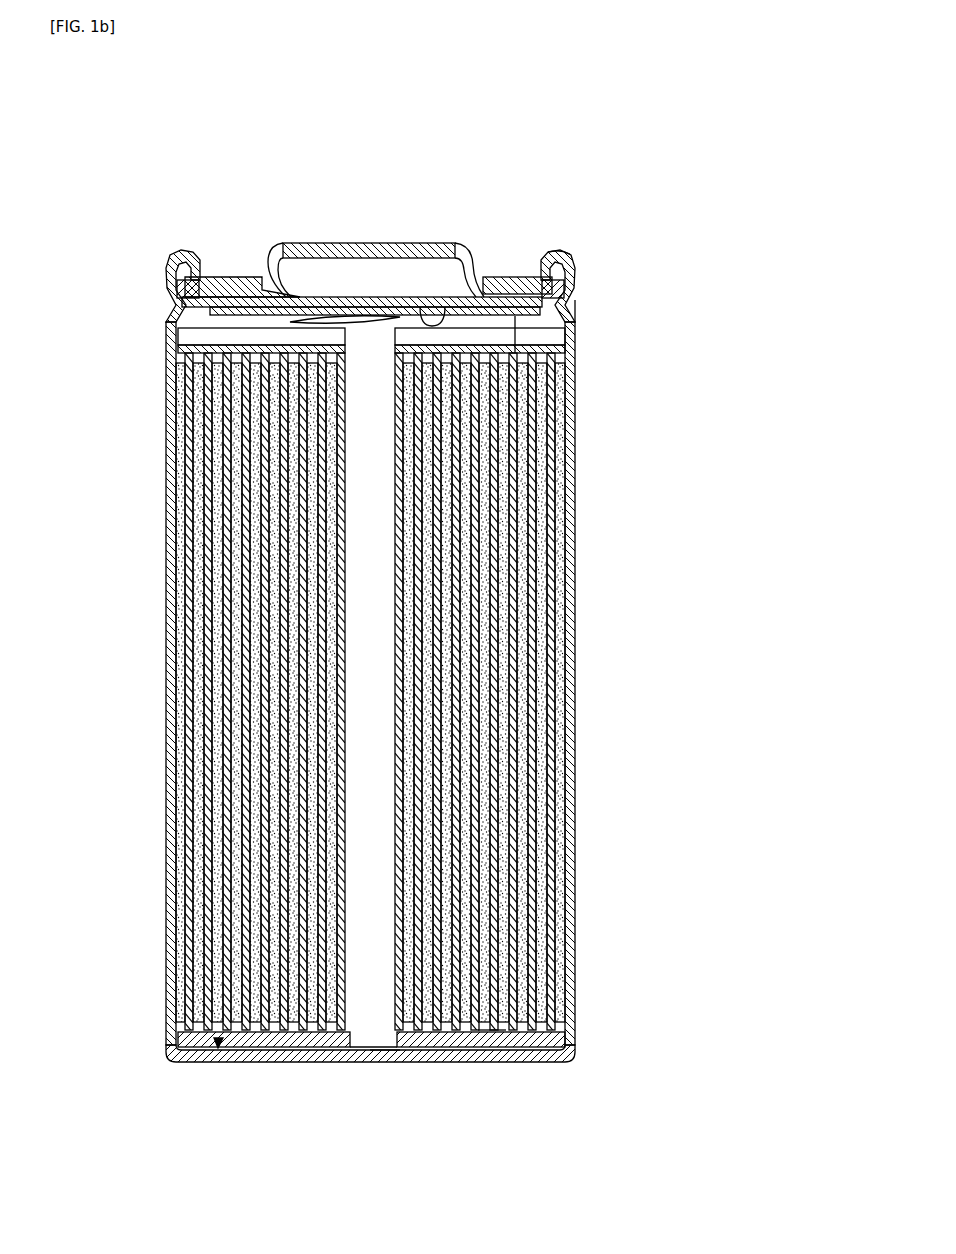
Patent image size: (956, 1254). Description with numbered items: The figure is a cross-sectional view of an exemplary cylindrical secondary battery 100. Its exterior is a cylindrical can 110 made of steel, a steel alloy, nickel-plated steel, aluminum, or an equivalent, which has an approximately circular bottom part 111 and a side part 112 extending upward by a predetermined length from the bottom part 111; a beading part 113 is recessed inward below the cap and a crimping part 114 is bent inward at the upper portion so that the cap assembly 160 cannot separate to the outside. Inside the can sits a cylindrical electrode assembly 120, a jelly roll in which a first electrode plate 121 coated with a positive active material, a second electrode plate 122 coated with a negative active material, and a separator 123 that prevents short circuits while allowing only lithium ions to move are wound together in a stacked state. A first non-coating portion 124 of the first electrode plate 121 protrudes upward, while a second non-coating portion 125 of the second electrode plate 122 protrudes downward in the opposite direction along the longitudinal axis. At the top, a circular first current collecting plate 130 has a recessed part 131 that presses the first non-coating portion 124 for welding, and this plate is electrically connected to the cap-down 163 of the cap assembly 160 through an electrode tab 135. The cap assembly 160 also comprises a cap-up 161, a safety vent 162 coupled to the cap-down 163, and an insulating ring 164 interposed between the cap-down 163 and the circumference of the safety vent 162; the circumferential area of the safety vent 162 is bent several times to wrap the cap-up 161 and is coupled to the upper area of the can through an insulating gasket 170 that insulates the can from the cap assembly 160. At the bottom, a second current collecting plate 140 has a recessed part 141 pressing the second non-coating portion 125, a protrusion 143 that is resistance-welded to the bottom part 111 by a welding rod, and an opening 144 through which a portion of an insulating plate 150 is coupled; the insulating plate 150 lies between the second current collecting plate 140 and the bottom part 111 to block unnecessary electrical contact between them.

The secondary battery 100 is at (668, 202).
The cylindrical can 110 is at (676, 1000).
The bottom part 111 is at (526, 1063).
The side part 112 is at (573, 1022).
The beading part 113 is at (577, 306).
The crimping part 114 is at (553, 251).
The electrode assembly 120 is at (676, 470).
The first electrode plate 121 is at (534, 487).
The second electrode plate 122 is at (556, 520).
The separator 123 is at (557, 560).
The first non-coating portion 124 is at (549, 354).
The second non-coating portion 125 is at (492, 1031).
The first current collecting plate 130 is at (573, 346).
The recessed part 131 is at (515, 316).
The electrode tab 135 is at (366, 326).
The second current collecting plate 140 is at (437, 1049).
The recessed part 141 is at (282, 1049).
The protrusion 143 is at (383, 1063).
The opening 144 is at (360, 1049).
The insulating plate 150 is at (218, 1050).
The cap assembly 160 is at (285, 240).
The cap-up 161 is at (443, 244).
The safety vent 162 is at (289, 293).
The cap-down 163 is at (406, 320).
The insulating ring 164 is at (176, 300).
The insulating gasket 170 is at (575, 270).